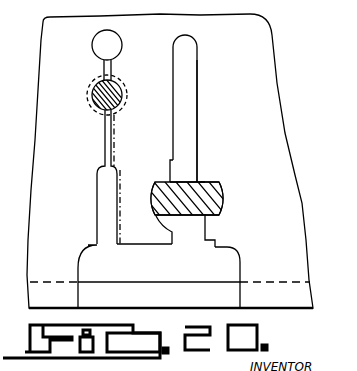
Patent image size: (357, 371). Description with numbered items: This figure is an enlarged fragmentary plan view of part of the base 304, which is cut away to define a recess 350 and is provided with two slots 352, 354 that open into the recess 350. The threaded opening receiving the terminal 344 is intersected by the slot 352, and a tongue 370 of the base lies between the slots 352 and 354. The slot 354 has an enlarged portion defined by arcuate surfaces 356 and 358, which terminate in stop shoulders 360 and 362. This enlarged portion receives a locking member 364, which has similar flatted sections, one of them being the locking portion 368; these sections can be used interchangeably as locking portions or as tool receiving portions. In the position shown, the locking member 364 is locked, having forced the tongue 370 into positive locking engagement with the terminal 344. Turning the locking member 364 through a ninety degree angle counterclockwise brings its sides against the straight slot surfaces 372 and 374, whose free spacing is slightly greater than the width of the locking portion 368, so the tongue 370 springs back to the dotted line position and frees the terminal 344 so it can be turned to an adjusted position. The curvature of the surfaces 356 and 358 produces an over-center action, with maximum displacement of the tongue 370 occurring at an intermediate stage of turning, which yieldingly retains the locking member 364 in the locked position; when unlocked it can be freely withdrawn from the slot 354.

The base 304 is at (263, 94).
The terminal 344 is at (118, 78).
The recess 350 is at (228, 248).
The slot 352 is at (102, 143).
The slot 354 is at (197, 87).
The arcuate surface 356 is at (222, 190).
The arcuate surface 358 is at (155, 216).
The stop shoulder 360 is at (222, 214).
The stop shoulder 362 is at (168, 182).
The locking member 364 is at (203, 182).
The flatted section 368 is at (212, 198).
The tongue 370 is at (160, 82).
The straight slot surface 372 is at (204, 226).
The straight slot surface 374 is at (190, 182).